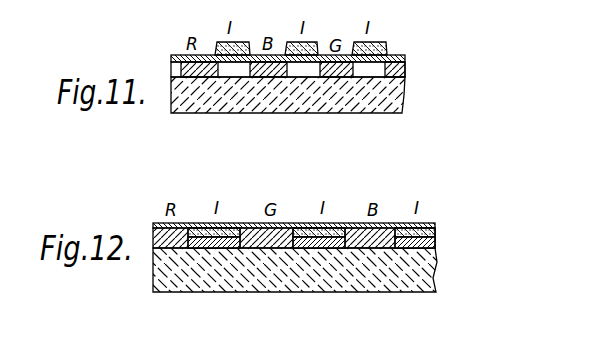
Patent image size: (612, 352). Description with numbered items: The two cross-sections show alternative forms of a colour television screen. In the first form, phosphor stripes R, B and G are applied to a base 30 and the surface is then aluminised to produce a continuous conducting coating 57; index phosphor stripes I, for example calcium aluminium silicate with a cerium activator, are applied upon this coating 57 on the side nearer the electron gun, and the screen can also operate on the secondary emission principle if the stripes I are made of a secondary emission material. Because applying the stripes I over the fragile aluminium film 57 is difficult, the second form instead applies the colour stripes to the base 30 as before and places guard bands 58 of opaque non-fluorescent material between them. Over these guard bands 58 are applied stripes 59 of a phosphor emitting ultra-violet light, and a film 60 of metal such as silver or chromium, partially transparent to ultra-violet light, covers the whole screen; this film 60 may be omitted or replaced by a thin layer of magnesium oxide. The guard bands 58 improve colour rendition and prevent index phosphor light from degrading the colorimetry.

In FIG. 11, the base 30 is at (175, 106).
In FIG. 12, the base 30 is at (170, 278).
In FIG. 11, the continuous conducting coating 57 is at (174, 55).
In FIG. 12, the guard bands 58 is at (217, 243).
In FIG. 12, the stripes of ultra-violet-emitting phosphor 59 is at (435, 240).
In FIG. 12, the metal film 60 is at (435, 224).